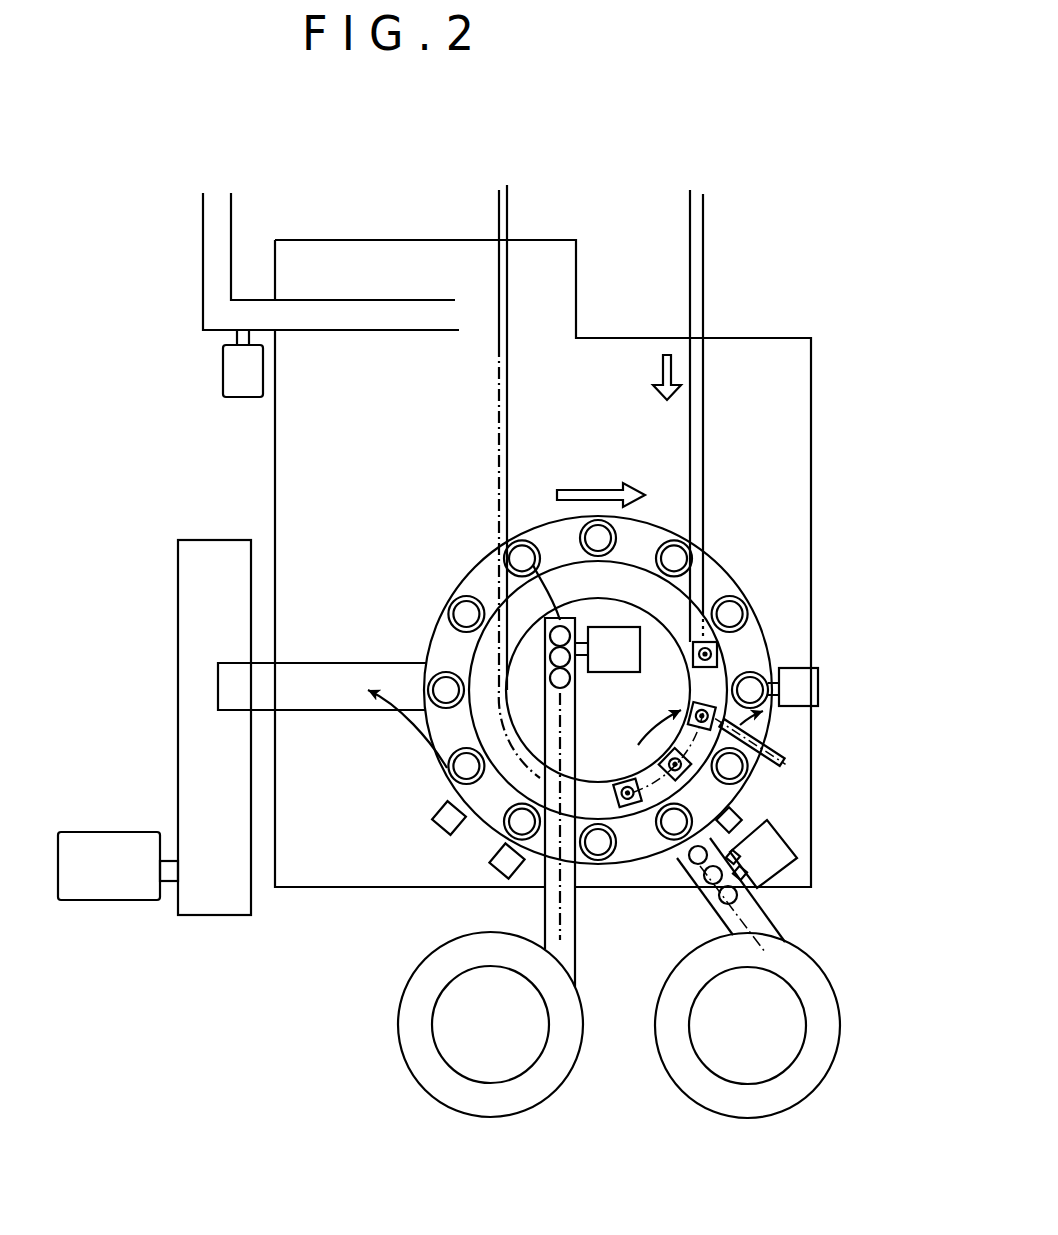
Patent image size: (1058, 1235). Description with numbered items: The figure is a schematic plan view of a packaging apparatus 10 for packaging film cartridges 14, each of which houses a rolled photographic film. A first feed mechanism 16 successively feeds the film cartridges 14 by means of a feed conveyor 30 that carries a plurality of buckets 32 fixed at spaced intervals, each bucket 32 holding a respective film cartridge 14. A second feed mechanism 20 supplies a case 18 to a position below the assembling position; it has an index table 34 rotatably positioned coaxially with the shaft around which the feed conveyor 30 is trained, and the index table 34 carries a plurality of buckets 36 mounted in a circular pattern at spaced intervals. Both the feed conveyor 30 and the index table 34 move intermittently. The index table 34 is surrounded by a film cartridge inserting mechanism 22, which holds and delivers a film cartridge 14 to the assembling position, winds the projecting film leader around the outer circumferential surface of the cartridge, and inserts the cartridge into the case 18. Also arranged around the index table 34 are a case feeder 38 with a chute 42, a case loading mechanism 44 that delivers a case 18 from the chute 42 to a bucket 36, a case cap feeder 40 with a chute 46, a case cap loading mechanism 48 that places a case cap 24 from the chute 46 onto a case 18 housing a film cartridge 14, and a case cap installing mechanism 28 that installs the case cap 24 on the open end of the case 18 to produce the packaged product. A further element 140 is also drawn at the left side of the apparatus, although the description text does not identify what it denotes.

The packaging apparatus 10 is at (877, 200).
The film cartridge 14 is at (686, 668).
The first feed mechanism 16 is at (717, 429).
The case 18 is at (573, 680).
The second feed mechanism 20 is at (755, 576).
The film cartridge inserting mechanism 22 is at (796, 768).
The case cap 24 is at (707, 889).
The case cap installing mechanism 28 is at (481, 873).
The feed conveyor 30 is at (684, 457).
The bucket 32 is at (722, 640).
The index table 34 is at (440, 641).
The bucket 36 is at (462, 596).
The case feeder 38 is at (452, 1077).
The case cap feeder 40 is at (723, 1090).
The chute 42 is at (577, 938).
The case loading mechanism 44 is at (553, 587).
The chute 46 is at (768, 920).
The case cap loading mechanism 48 is at (626, 844).
The drive unit 140 is at (221, 891).